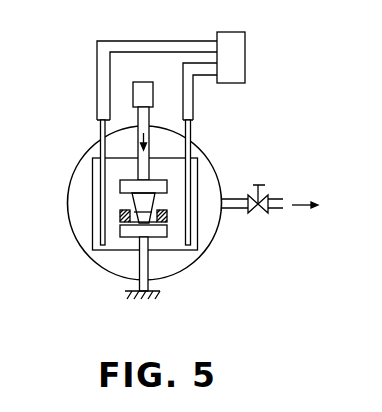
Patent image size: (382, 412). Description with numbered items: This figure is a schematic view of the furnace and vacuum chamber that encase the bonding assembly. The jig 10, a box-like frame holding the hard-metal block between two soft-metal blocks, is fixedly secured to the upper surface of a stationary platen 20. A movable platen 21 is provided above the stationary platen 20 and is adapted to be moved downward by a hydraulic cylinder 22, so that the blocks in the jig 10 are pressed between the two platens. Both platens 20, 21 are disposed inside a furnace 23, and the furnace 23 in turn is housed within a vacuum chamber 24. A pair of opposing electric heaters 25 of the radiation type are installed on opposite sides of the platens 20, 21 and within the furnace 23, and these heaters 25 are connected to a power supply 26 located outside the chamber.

The jig 10 is at (167, 217).
The stationary platen 20 is at (132, 232).
The movable platen 21 is at (127, 183).
The hydraulic cylinder 22 is at (146, 95).
The furnace 23 is at (93, 215).
The vacuum chamber 24 is at (205, 155).
The electric heaters 25 is at (100, 190).
The power supply 26 is at (238, 63).